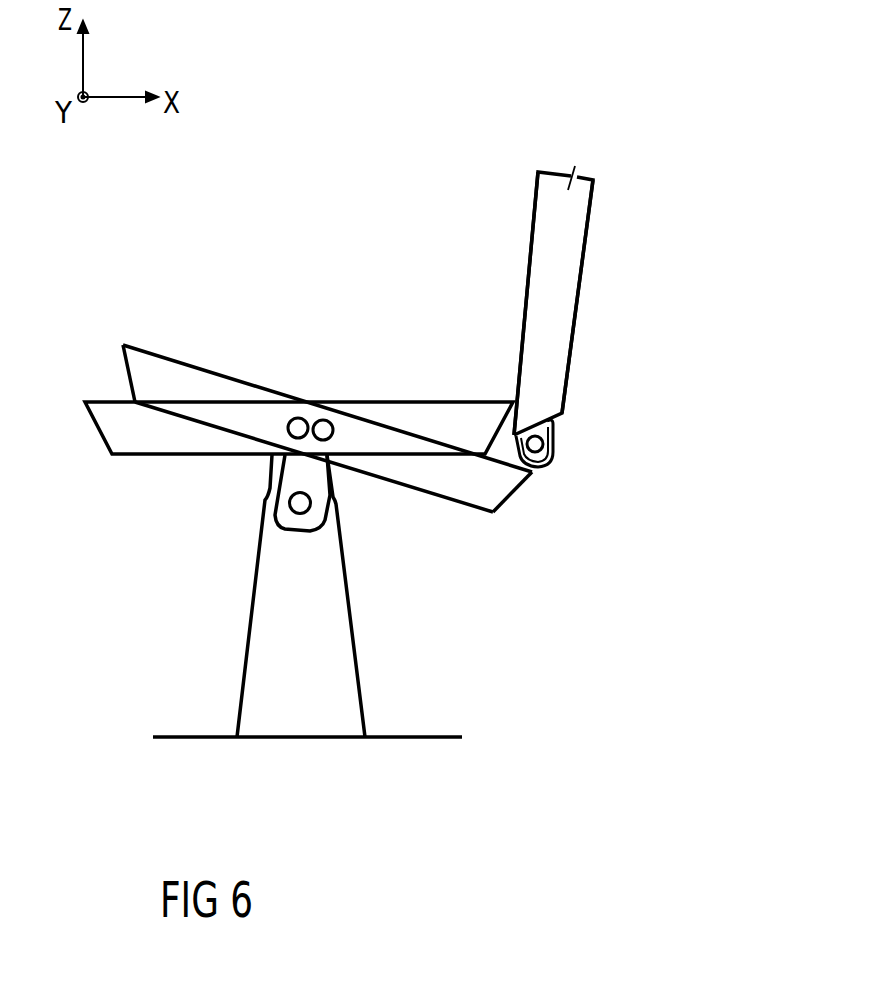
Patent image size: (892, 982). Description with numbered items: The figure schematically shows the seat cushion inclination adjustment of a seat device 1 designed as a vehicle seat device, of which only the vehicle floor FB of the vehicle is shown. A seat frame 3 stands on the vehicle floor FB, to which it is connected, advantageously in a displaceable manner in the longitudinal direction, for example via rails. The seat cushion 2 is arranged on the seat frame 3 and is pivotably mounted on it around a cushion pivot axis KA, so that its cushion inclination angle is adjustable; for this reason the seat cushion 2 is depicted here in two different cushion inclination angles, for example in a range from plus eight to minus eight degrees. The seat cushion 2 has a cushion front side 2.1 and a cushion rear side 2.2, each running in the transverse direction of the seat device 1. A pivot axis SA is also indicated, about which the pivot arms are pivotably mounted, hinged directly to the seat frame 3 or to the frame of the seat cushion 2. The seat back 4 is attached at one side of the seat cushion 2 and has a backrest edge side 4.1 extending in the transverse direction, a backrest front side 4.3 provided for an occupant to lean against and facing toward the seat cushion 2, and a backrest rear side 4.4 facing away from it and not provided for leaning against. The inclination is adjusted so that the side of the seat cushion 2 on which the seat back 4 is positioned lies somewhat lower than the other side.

The seat device 1 is at (482, 116).
The seat cushion 2 is at (200, 363).
The cushion front side 2.1 is at (505, 498).
The cushion rear side 2.2 is at (126, 373).
The pivot axis SA is at (306, 418).
The cushion pivot axis KA is at (293, 505).
The seat frame 3 is at (263, 648).
The vehicle floor FB is at (340, 738).
The seat back 4 is at (560, 310).
The backrest edge side 4.1 is at (552, 437).
The backrest front side 4.3 is at (533, 213).
The backrest rear side 4.4 is at (583, 265).